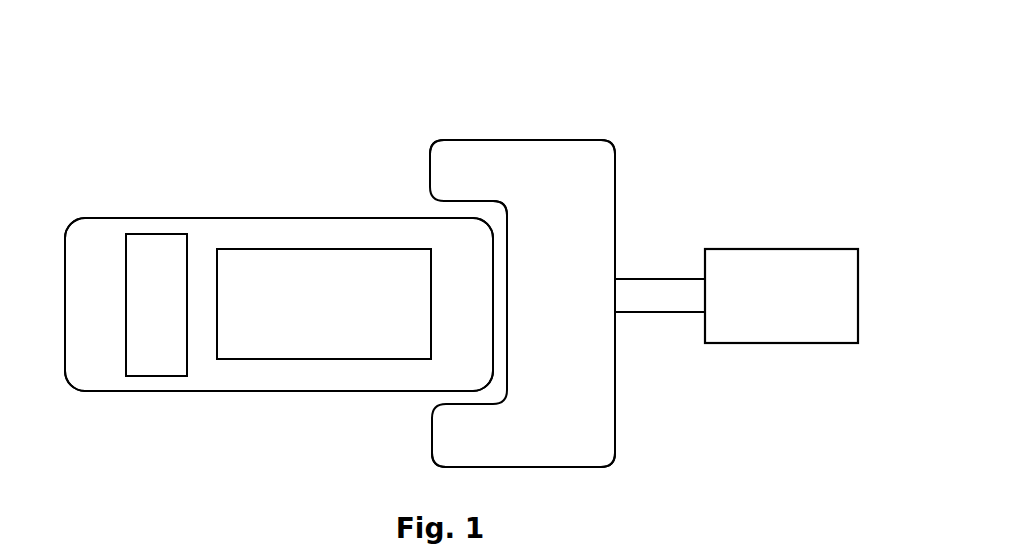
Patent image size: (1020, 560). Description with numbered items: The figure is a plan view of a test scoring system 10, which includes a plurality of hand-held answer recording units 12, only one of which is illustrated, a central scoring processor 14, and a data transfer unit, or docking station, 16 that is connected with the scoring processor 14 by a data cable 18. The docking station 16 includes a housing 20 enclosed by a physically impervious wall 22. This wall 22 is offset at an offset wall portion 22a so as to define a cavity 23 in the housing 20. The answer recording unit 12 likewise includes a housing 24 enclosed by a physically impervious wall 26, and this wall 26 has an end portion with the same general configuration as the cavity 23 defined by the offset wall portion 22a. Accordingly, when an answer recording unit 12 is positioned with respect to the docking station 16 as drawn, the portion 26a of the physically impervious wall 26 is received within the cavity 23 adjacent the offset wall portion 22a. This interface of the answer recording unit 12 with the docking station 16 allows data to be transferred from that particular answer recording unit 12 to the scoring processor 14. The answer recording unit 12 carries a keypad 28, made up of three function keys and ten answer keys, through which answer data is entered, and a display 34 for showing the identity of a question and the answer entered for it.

The test scoring system 10 is at (652, 121).
The hand-held answer recording unit 12 is at (164, 402).
The central scoring processor 14 is at (766, 352).
The docking station (data transfer unit) 16 is at (628, 433).
The data cable 18 is at (652, 313).
The housing of docking station 20 is at (615, 202).
The physically impervious wall 22 is at (432, 432).
The offset wall portion 22a is at (508, 305).
The cavity 23 is at (503, 254).
The housing of answer recording unit 24 is at (470, 140).
The physically impervious wall 26 is at (249, 392).
The wall portion of answer recording unit 26a is at (493, 337).
The keypad 28 is at (303, 249).
The display 34 is at (150, 234).